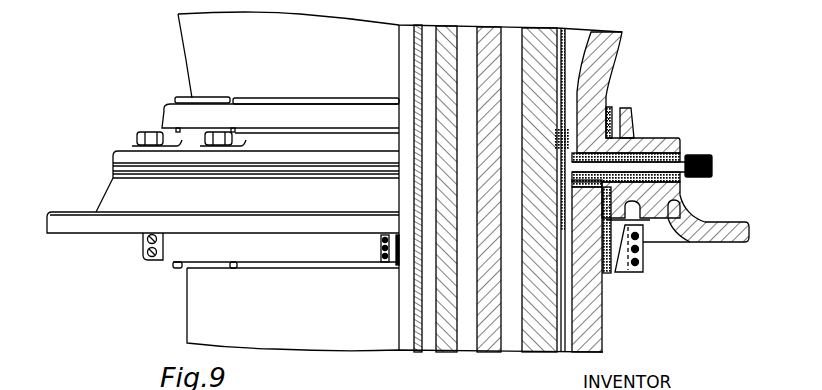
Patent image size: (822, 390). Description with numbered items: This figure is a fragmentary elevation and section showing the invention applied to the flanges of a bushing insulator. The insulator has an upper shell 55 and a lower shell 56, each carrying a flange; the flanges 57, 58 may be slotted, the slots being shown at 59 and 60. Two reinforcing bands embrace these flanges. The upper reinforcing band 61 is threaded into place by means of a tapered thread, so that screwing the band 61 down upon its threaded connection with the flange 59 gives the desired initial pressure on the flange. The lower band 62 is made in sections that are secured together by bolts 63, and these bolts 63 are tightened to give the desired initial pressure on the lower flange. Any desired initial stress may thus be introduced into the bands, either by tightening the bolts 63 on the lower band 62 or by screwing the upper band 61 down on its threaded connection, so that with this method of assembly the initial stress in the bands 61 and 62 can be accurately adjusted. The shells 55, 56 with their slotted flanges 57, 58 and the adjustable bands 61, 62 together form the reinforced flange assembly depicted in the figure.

The upper shell 55 is at (608, 52).
The lower shell 56 is at (588, 326).
The flange 57 is at (617, 118).
The flange 58 is at (616, 273).
The slot 59 is at (302, 100).
The slot 60 is at (299, 266).
The upper reinforcing band 61 is at (246, 112).
The lower band 62 is at (238, 257).
The bolts 63 is at (143, 251).